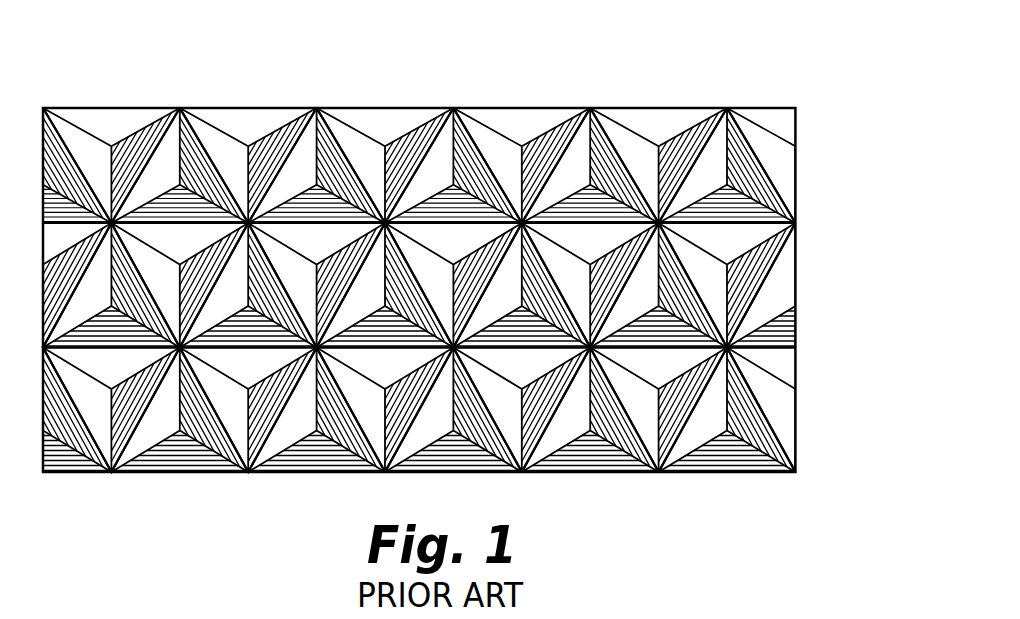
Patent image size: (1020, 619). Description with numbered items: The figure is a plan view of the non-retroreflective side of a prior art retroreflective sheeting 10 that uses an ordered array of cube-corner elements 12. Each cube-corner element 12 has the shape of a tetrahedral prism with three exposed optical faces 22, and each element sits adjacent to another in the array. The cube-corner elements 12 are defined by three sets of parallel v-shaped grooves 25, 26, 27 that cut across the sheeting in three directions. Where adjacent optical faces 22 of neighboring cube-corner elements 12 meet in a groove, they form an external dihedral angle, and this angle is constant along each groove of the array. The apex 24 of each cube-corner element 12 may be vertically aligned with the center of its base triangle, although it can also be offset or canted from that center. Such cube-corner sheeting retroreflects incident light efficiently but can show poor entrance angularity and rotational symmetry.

The retroreflective sheeting 10 is at (716, 57).
The cube-corner element 12 is at (382, 120).
The optical face 22 is at (262, 148).
The apex 24 is at (655, 148).
The first set of parallel v-shaped grooves 25 is at (753, 345).
The second set of parallel v-shaped grooves 26 is at (752, 410).
The third set of parallel v-shaped grooves 27 is at (258, 420).